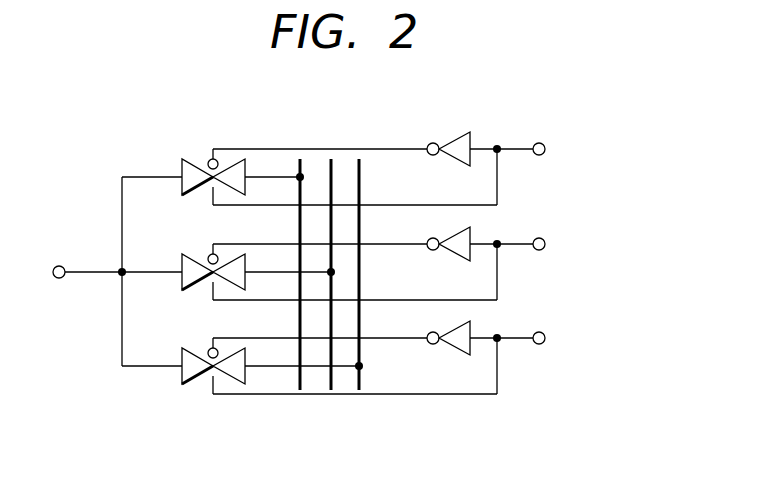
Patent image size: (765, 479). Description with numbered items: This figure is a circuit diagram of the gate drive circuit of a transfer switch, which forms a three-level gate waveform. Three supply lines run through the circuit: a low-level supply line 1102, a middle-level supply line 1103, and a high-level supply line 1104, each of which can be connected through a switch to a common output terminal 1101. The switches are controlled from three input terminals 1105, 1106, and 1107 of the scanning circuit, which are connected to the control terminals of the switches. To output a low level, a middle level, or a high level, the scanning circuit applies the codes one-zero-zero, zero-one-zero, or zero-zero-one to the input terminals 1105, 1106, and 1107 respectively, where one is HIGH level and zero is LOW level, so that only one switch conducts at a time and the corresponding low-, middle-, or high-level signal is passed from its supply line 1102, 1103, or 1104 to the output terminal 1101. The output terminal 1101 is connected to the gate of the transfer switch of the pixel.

The output terminal 1101 is at (60, 266).
The low-level supply line 1102 is at (297, 378).
The middle-level supply line 1103 is at (333, 170).
The high-level supply line 1104 is at (361, 377).
The input terminal of the scanning circuit 1105 is at (545, 143).
The input terminal of the scanning circuit 1106 is at (545, 238).
The input terminal of the scanning circuit 1107 is at (545, 332).